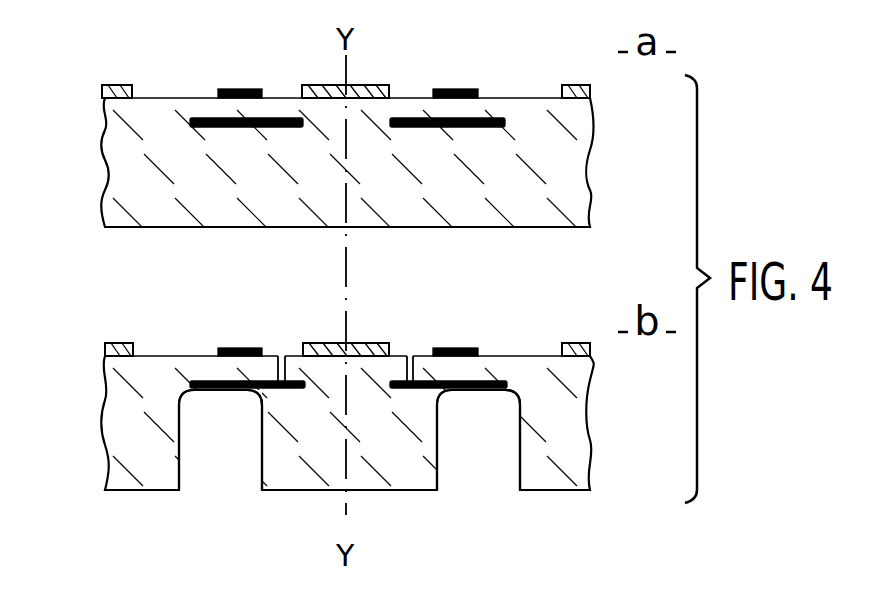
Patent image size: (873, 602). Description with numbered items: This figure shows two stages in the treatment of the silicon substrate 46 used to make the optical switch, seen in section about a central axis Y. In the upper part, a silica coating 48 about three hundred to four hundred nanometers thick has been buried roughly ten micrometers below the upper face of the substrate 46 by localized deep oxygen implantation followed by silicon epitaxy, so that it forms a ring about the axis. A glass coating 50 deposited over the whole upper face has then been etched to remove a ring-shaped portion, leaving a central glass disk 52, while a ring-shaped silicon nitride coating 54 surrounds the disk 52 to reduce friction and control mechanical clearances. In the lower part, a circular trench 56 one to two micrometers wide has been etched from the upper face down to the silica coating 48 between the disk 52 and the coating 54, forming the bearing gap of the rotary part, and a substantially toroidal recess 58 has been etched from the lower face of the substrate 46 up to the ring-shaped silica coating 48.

The silicon substrate 46 is at (137, 162).
The silica coating 48 is at (503, 118).
The glass coating 50 is at (108, 85).
The glass disk 52 is at (372, 87).
The ring-shaped silicon nitride coating 54 is at (232, 88).
The circular trench 56 is at (281, 356).
The toroidal recess 58 is at (482, 450).